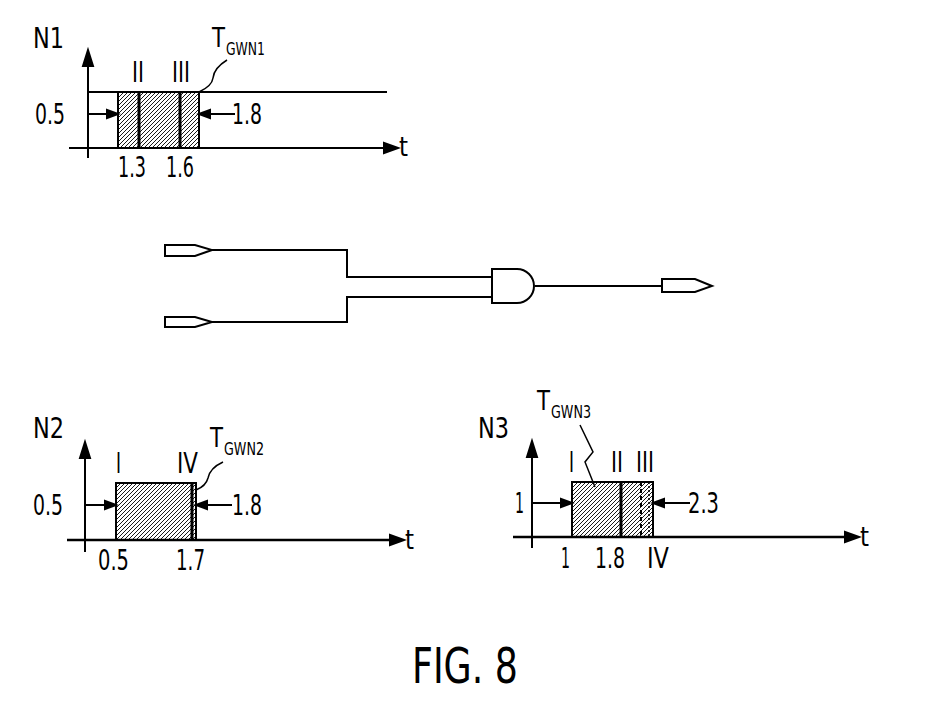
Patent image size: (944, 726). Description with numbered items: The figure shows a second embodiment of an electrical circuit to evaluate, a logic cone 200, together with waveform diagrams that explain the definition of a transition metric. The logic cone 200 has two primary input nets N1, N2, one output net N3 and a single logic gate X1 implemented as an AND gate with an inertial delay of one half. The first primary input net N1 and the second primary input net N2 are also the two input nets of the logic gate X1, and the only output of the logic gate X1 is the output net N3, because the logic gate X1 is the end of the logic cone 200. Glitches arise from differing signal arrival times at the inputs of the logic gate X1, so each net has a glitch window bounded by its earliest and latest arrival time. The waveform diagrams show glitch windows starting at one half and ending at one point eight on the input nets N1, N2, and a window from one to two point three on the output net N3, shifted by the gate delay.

The logic cone 200 is at (459, 260).
The first primary input net N1 is at (328, 239).
The second primary input net N2 is at (328, 303).
The output net N3 is at (623, 308).
The logic gate X1 is at (511, 292).